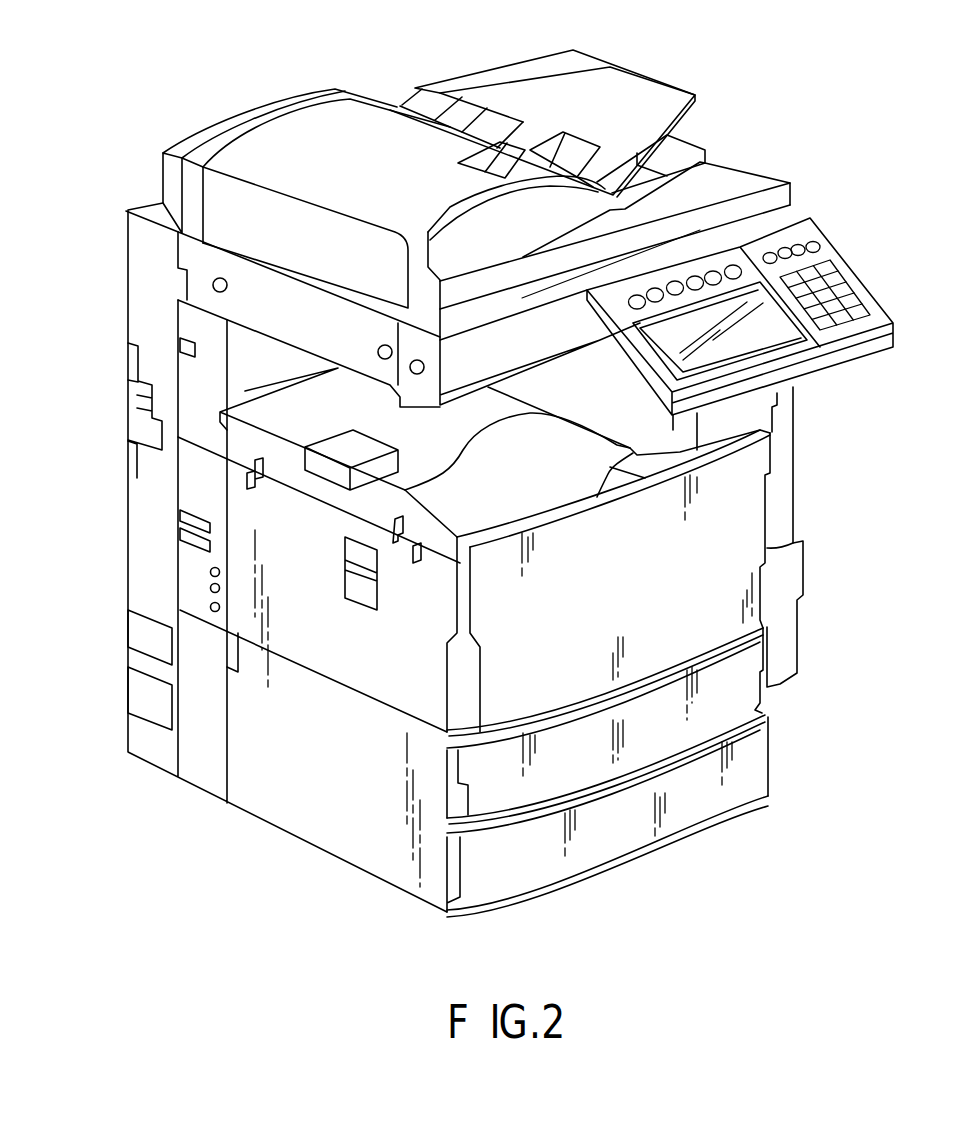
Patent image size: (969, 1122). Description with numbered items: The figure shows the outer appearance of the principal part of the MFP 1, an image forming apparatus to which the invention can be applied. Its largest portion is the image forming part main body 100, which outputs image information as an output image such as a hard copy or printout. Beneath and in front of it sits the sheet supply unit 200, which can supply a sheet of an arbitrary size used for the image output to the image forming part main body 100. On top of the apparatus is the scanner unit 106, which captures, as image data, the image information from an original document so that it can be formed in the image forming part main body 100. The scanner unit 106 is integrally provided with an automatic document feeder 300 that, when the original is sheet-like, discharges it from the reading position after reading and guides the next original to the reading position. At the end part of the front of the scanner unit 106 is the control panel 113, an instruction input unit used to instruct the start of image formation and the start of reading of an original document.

The MFP 1 is at (471, 478).
The image forming part main body 100 is at (337, 650).
The scanner unit 106 is at (218, 302).
The control panel 113 is at (750, 333).
The sheet supply unit 200 is at (372, 805).
The automatic document feeder 300 is at (317, 135).